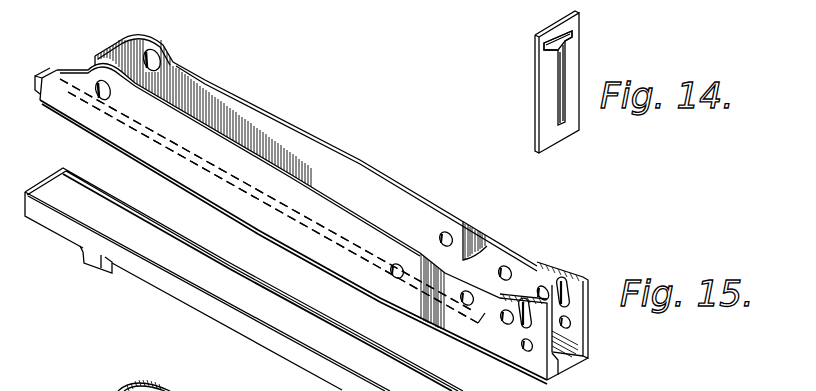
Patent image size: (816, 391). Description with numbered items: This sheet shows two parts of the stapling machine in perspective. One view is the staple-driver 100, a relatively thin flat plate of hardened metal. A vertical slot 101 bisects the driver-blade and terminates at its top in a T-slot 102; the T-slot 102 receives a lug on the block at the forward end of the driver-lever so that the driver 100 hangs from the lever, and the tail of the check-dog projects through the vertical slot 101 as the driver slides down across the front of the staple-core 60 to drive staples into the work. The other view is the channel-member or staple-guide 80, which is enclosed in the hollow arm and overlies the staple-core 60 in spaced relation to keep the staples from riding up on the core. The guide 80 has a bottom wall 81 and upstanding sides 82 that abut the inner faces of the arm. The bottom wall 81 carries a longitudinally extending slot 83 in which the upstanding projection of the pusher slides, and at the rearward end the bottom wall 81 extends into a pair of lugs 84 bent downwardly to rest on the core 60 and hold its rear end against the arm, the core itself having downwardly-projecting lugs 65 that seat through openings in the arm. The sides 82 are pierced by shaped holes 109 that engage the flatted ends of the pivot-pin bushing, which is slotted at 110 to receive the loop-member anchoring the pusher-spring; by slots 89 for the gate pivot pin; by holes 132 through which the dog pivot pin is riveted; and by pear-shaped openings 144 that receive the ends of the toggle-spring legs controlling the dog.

In FIG. 15, the staple-core 60 is at (209, 320).
In FIG. 15, the lugs 65 is at (100, 270).
In FIG. 15, the channel-member or staple-guide 80 is at (338, 150).
In FIG. 15, the bottom wall 81 is at (577, 364).
In FIG. 15, the upstanding sides 82 is at (297, 248).
In FIG. 15, the slot 83 is at (234, 188).
In FIG. 15, the lugs 84 is at (53, 67).
In FIG. 15, the slots 89 is at (522, 328).
In FIG. 14, the staple-driver 100 is at (580, 65).
In FIG. 14, the vertical slot 101 is at (556, 113).
In FIG. 14, the T-slot 102 is at (552, 41).
In FIG. 15, the holes 109 is at (170, 58).
In FIG. 15, the slot 110 is at (107, 385).
In FIG. 15, the holes 132 is at (527, 348).
In FIG. 15, the pear-shaped slots or openings 144 is at (500, 320).